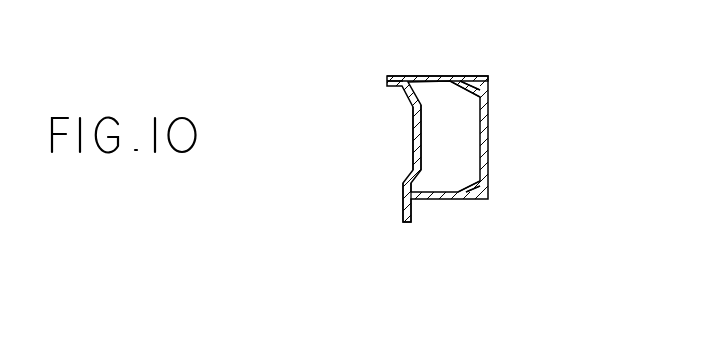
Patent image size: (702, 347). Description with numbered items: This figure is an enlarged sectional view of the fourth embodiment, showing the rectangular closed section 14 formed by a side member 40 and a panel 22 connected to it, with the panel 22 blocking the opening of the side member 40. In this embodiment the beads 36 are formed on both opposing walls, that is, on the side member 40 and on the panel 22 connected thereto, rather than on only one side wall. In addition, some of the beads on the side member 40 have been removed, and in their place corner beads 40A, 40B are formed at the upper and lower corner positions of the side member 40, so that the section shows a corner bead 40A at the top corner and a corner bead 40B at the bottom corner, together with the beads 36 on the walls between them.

The rectangular closed section 14 is at (468, 148).
The side member 40 is at (443, 71).
The corner bead 40A is at (489, 78).
The corner bead 40B is at (481, 200).
The beads 36 is at (413, 144).
The panel 22 is at (403, 202).